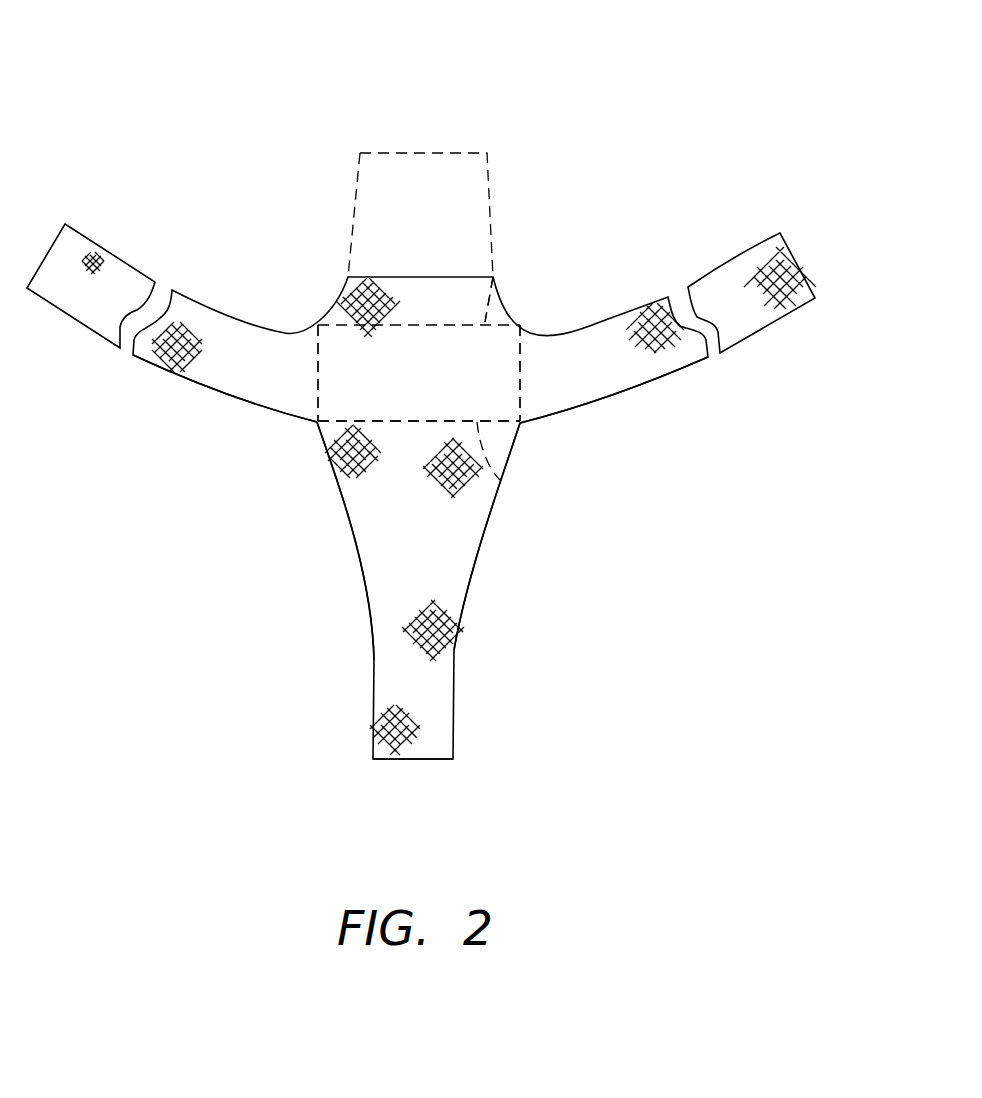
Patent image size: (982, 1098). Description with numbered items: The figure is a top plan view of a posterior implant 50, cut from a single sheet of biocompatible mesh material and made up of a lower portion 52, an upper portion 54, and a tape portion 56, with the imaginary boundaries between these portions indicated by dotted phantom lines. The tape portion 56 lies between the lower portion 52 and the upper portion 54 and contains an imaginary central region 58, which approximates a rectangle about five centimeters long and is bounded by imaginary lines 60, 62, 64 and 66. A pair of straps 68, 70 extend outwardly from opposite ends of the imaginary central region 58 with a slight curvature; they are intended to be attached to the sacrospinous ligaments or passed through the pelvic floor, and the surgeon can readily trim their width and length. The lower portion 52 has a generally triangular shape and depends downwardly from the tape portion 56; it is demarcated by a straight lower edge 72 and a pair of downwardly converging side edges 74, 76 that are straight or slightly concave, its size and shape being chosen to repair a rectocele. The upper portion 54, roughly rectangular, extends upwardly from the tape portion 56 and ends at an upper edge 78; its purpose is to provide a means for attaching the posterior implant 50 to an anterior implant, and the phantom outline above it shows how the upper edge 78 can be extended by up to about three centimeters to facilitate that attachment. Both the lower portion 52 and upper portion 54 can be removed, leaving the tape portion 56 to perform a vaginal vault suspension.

The posterior implant 50 is at (252, 124).
The lower portion 52 is at (423, 531).
The upper portion 54 is at (440, 313).
The tape portion 56 is at (269, 408).
The imaginary central region 58 is at (433, 398).
The imaginary line 60 is at (317, 393).
The imaginary line 62 is at (521, 400).
The imaginary line 64 is at (500, 480).
The imaginary line 66 is at (503, 290).
The strap 68 is at (127, 263).
The strap 70 is at (757, 333).
The lower edge 72 is at (398, 760).
The side edge 74 is at (357, 553).
The side edge 76 is at (470, 570).
The upper edge 78 is at (390, 152).